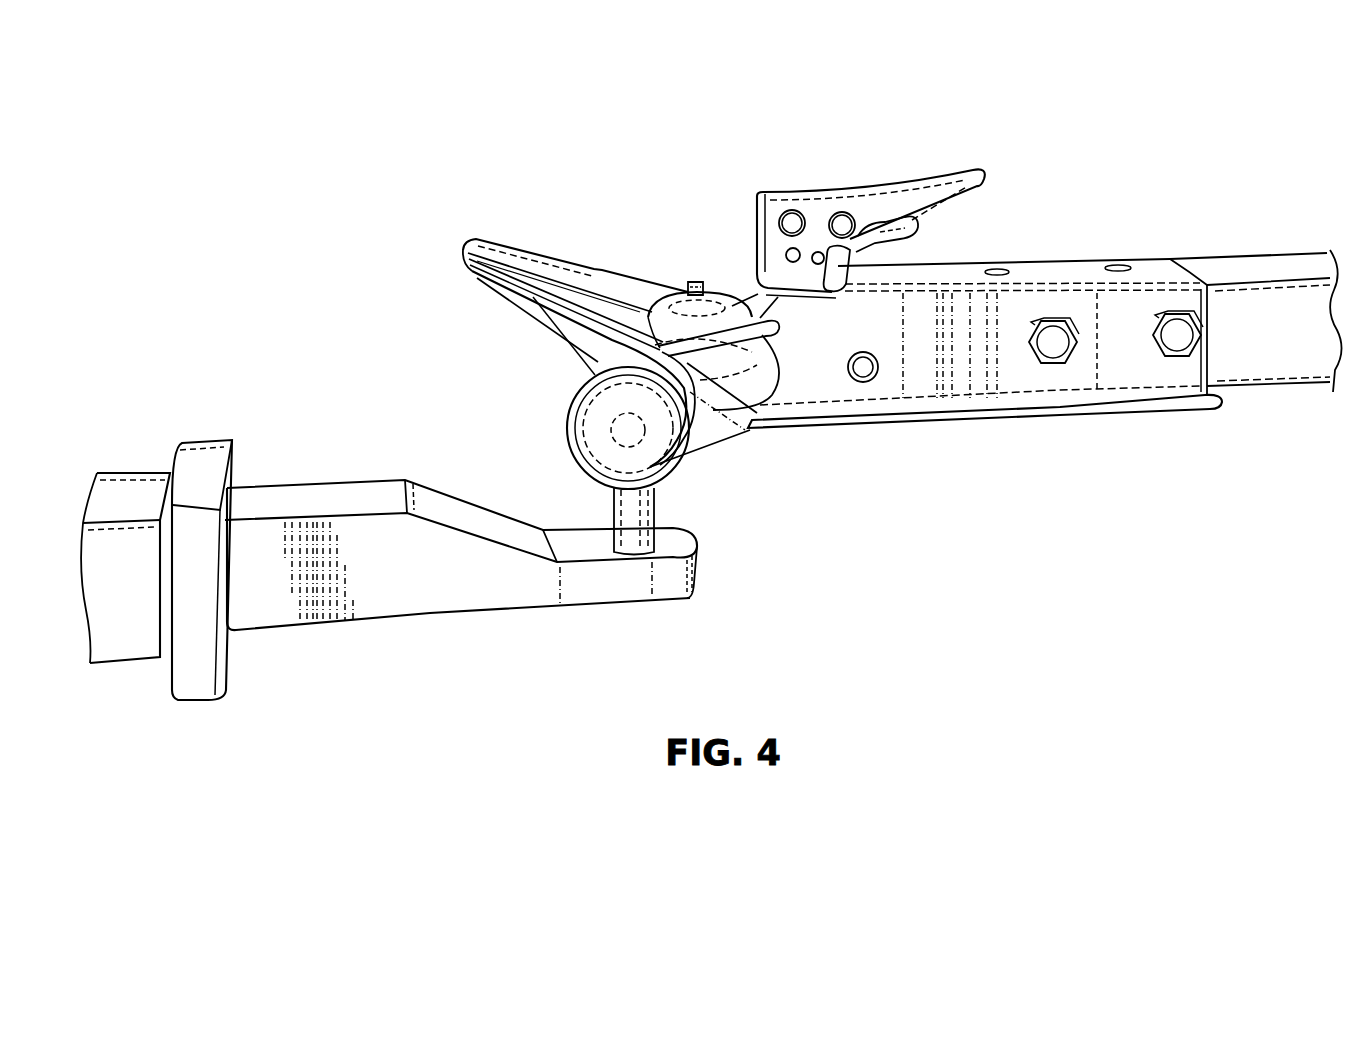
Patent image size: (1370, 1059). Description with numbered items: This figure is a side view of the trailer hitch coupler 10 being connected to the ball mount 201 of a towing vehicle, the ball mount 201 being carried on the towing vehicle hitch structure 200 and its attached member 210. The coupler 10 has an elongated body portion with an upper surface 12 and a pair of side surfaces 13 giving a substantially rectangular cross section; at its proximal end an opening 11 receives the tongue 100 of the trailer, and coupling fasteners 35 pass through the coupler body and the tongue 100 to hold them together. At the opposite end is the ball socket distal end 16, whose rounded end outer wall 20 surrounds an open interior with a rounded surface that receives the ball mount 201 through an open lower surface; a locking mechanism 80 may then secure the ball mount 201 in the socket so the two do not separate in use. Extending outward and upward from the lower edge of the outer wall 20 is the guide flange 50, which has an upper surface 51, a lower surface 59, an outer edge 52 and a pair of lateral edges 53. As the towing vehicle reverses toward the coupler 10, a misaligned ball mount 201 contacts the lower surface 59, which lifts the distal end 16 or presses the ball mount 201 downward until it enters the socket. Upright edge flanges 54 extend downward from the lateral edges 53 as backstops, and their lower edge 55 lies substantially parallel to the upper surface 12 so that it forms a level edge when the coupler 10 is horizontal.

The trailer hitch coupler 10 is at (985, 377).
The opening 11 is at (1210, 332).
The upper surface 12 is at (1068, 276).
The side surfaces 13 is at (1131, 364).
The ball socket distal end 16 is at (639, 283).
The rounded end outer wall 20 is at (723, 303).
The coupling fasteners 35 is at (1053, 367).
The guide flange 50 is at (558, 235).
The upper surface 51 is at (530, 262).
The outer edge 52 is at (462, 247).
The lateral edges 53 is at (745, 384).
The upright edge flanges 54 is at (740, 440).
The lower edge 55 is at (723, 458).
The lower surface 59 is at (540, 312).
The locking mechanism 80 is at (875, 148).
The tongue 100 is at (1290, 372).
The ball mount 200 is at (415, 560).
The ball mount 201 is at (570, 424).
The hitch shank 210 is at (135, 480).